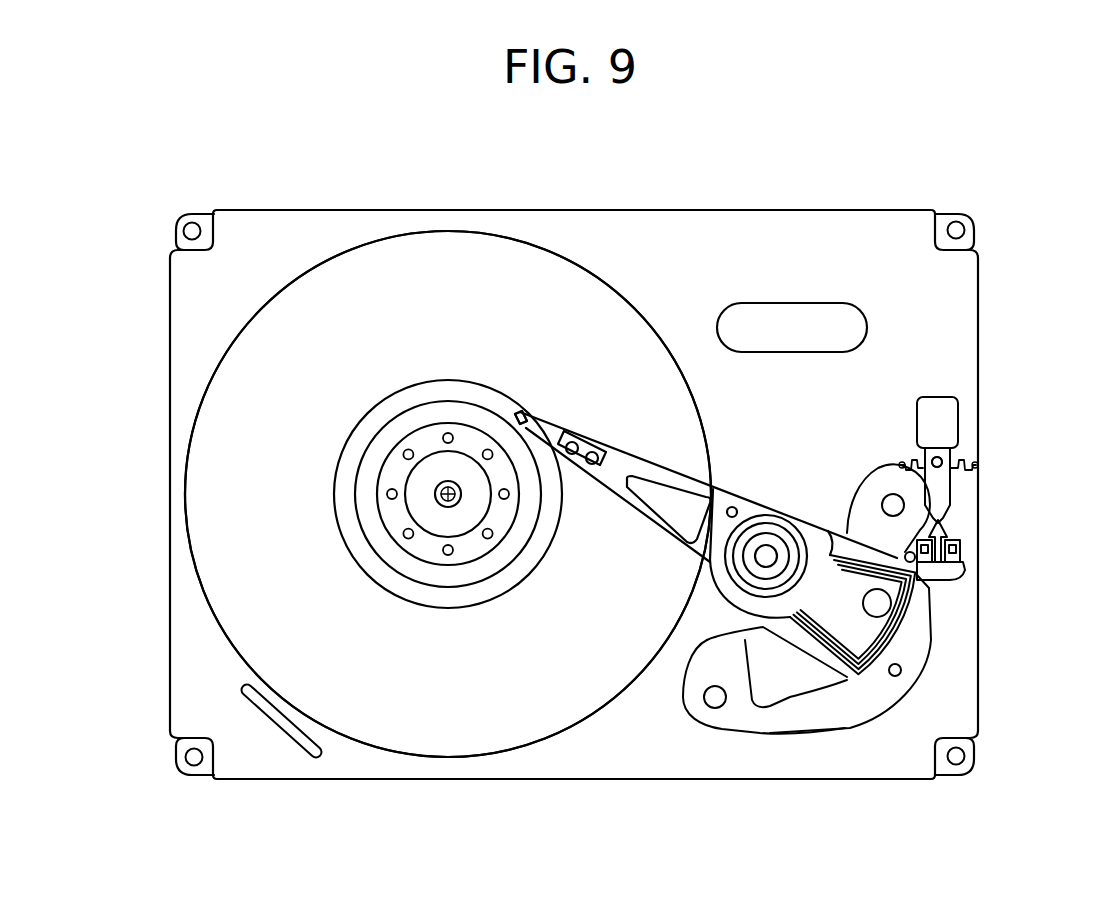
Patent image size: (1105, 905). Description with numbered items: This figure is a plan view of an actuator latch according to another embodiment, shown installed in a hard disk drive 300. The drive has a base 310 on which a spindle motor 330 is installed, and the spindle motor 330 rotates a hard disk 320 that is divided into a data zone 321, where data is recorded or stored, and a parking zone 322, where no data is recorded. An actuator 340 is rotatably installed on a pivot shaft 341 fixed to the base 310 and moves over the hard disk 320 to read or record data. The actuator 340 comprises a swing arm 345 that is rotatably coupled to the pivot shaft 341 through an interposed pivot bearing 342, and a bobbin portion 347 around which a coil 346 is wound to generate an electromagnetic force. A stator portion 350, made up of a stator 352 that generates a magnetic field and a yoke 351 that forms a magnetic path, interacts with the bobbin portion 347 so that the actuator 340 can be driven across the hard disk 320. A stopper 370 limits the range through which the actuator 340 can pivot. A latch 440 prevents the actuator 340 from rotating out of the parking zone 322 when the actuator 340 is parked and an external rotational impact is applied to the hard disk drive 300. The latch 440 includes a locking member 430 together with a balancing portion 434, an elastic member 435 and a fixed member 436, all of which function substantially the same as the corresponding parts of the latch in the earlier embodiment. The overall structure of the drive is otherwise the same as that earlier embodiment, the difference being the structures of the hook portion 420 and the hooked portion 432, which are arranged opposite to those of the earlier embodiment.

The hard disk drive 300 is at (1005, 205).
The base 310 is at (880, 233).
The hard disk 320 is at (325, 253).
The data zone 321 is at (428, 244).
The parking zone 322 is at (318, 445).
The spindle motor 330 is at (418, 507).
The actuator 340 is at (638, 530).
The pivot shaft 341 is at (766, 546).
The pivot bearing 342 is at (787, 535).
The swing arm 345 is at (655, 470).
The coil 346 is at (858, 678).
The bobbin portion 347 is at (868, 680).
The stator portion 350 is at (707, 733).
The yoke 351 is at (733, 720).
The stator 352 is at (790, 697).
The stopper 370 is at (865, 518).
The hook portion 420 is at (955, 572).
The locking member 430 is at (964, 408).
The hooked portion 432 is at (960, 548).
The balancing portion 434 is at (939, 405).
The elastic member 435 is at (978, 446).
The fixed member 436 is at (982, 467).
The latch 440 is at (985, 562).